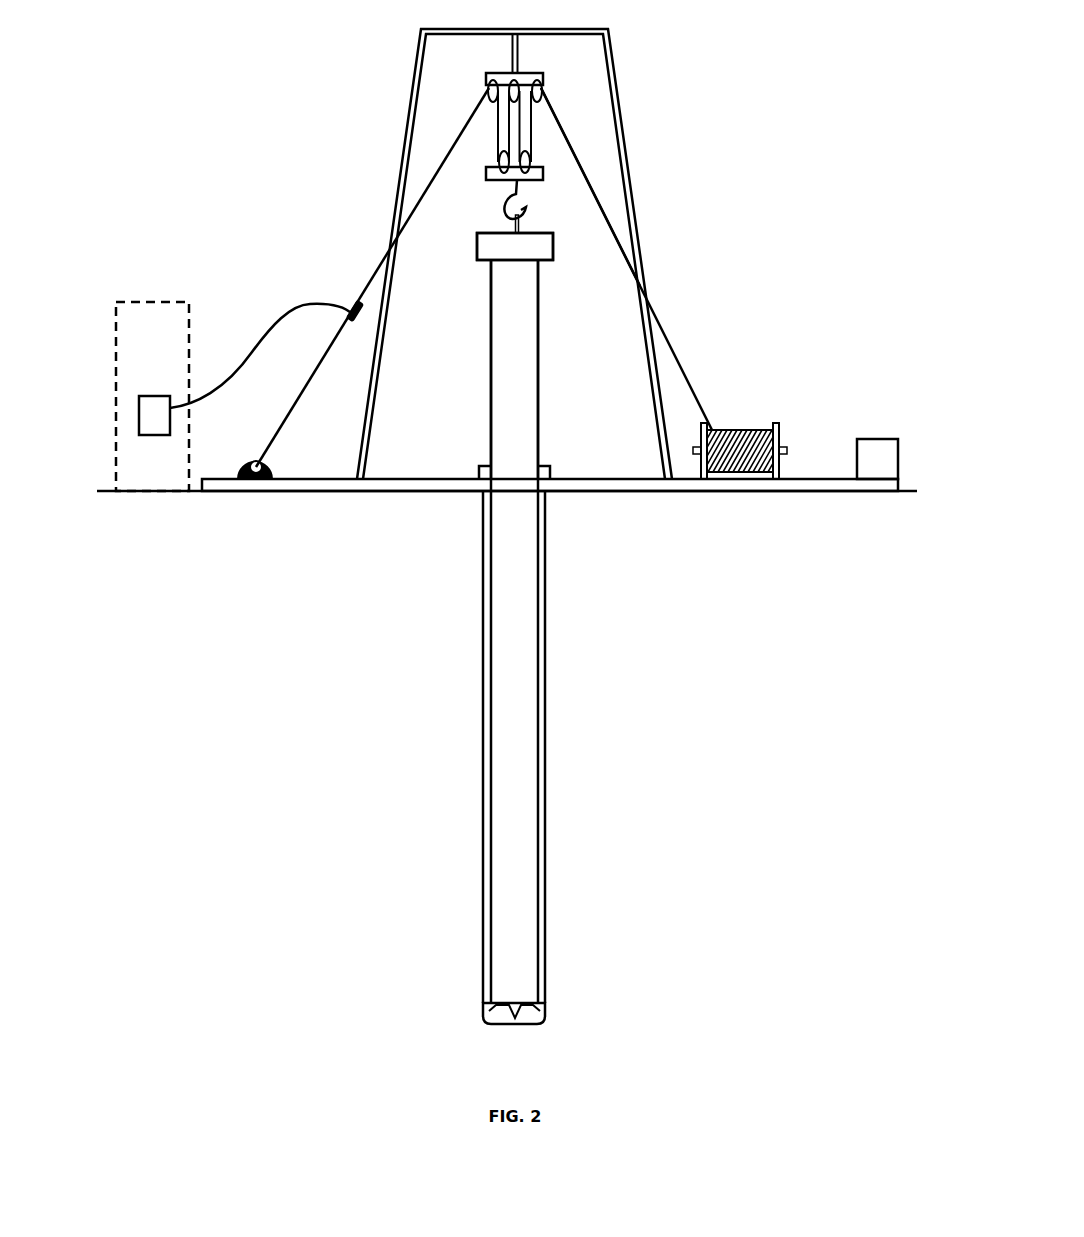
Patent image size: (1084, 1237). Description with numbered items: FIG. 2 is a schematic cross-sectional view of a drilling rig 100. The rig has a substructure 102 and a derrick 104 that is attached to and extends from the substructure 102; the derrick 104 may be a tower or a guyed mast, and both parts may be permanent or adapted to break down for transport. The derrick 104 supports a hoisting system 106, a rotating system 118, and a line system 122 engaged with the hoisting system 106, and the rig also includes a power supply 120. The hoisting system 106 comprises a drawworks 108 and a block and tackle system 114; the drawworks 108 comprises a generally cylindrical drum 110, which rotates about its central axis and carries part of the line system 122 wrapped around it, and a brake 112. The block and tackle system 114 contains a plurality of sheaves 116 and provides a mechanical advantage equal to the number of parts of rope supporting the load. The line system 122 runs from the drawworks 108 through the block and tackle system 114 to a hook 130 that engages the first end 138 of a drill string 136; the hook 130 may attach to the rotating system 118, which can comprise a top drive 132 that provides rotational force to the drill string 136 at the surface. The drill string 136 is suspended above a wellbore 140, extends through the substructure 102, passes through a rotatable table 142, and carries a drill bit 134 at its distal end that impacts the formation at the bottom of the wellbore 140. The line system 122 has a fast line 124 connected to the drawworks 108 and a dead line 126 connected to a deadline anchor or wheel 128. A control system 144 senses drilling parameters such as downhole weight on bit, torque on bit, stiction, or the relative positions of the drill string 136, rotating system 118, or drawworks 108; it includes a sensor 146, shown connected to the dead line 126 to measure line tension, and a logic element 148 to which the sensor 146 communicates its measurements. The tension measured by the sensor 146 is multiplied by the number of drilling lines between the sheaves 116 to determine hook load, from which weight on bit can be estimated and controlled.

The drilling rig 100 is at (822, 35).
The substructure 102 is at (816, 492).
The derrick 104 is at (618, 117).
The hoisting system 106 is at (558, 74).
The drawworks 108 is at (764, 474).
The drum 110 is at (745, 472).
The brake 112 is at (779, 437).
The block and tackle system 114 is at (541, 118).
The traveling block 116 is at (545, 170).
The rotating system 118 is at (477, 248).
The power supply 120 is at (886, 439).
The line system 122 is at (680, 362).
The fast line 124 is at (628, 222).
The dead line 126 is at (332, 348).
The deadline anchor or wheel 128 is at (251, 461).
The hook 130 is at (503, 210).
The swivel 132 is at (553, 249).
The drill bit 134 is at (545, 1018).
The drill string 136 is at (538, 441).
The first end 138 is at (540, 268).
The wellbore 140 is at (545, 530).
The rotatable table 142 is at (479, 470).
The control system 144 is at (190, 308).
The sensor 146 is at (352, 304).
The logic element 148 is at (146, 435).